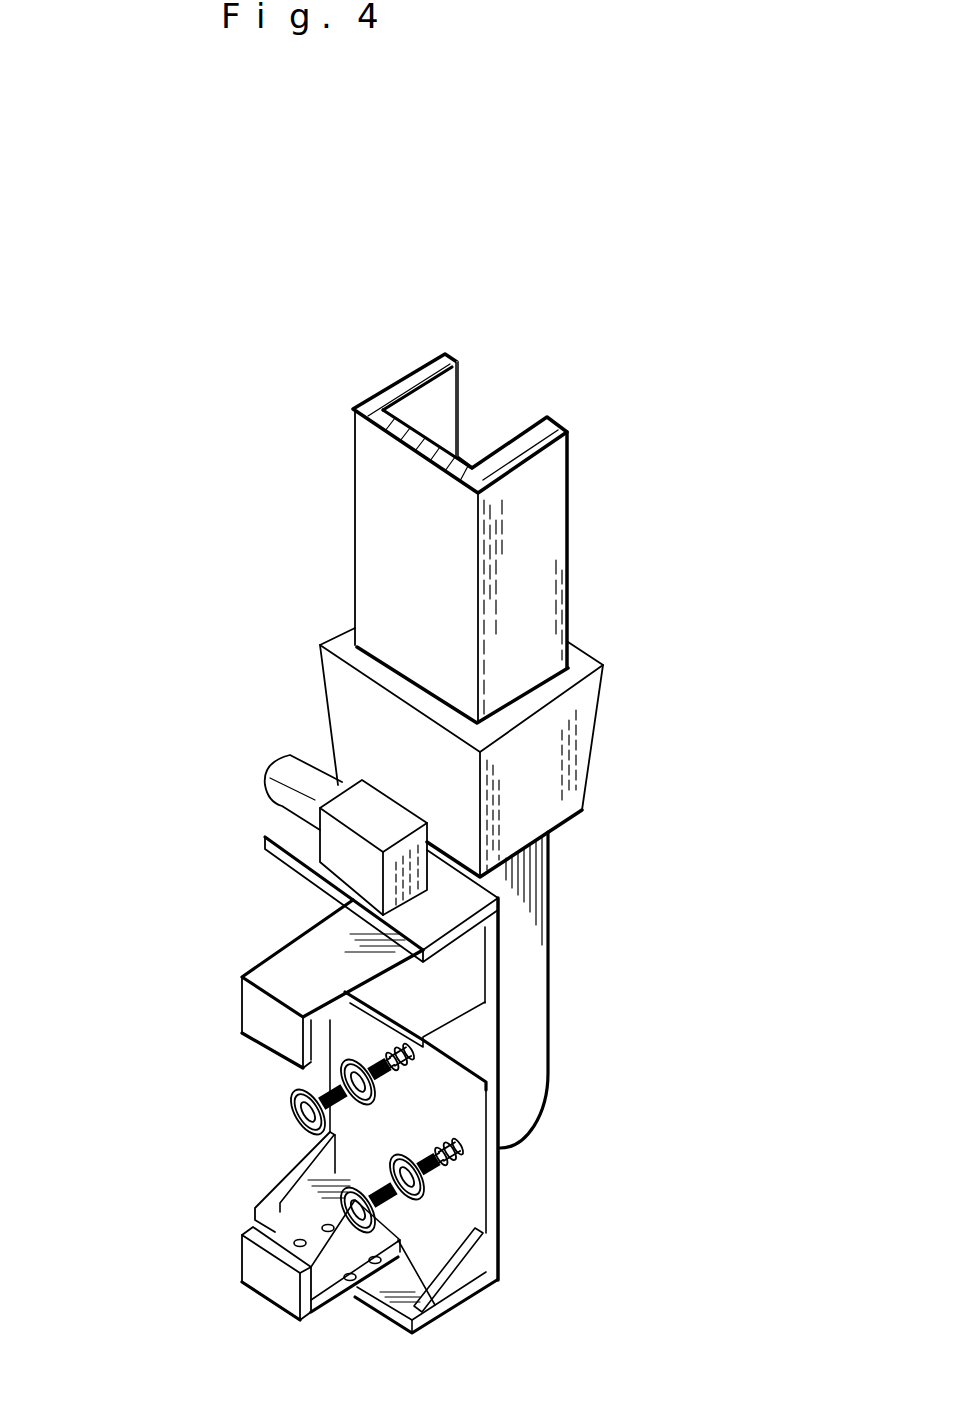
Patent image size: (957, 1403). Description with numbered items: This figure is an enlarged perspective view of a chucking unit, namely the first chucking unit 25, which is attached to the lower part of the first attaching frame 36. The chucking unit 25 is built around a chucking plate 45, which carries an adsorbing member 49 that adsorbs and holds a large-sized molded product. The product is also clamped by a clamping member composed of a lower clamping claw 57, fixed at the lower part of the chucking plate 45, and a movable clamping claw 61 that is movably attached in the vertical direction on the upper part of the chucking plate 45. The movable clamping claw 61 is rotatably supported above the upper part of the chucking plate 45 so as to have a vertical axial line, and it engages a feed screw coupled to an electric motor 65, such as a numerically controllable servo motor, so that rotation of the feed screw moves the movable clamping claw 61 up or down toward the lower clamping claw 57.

The first attaching frame 36 is at (535, 548).
The first chucking unit 25 is at (552, 907).
The electric motor 65 is at (283, 800).
The chucking plate 45 is at (519, 1058).
The movable clamping claw 61 is at (223, 984).
The adsorbing member 49 is at (362, 1074).
The lower clamping claw 57 is at (322, 1266).